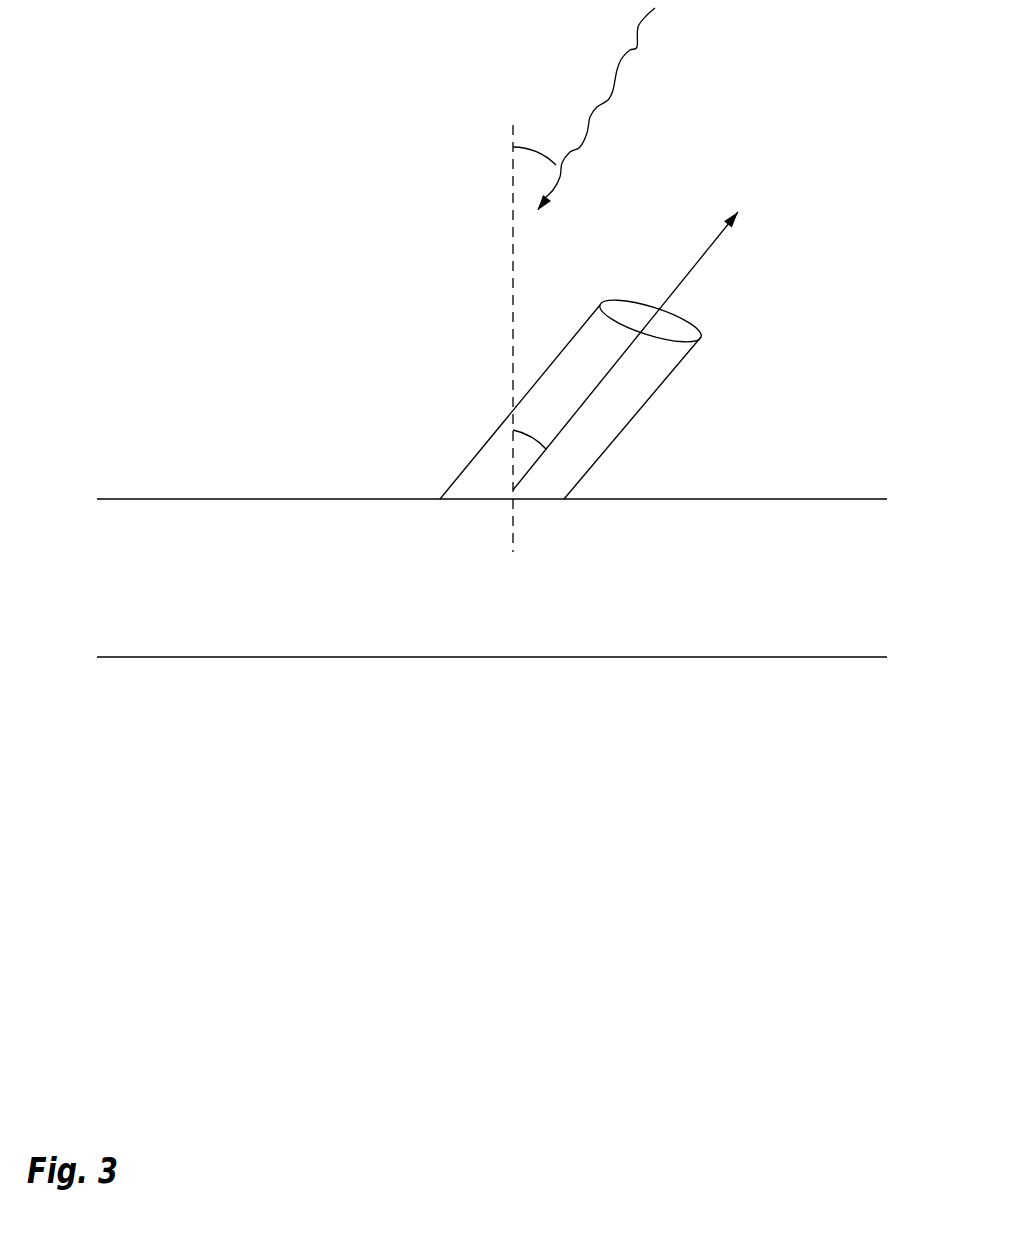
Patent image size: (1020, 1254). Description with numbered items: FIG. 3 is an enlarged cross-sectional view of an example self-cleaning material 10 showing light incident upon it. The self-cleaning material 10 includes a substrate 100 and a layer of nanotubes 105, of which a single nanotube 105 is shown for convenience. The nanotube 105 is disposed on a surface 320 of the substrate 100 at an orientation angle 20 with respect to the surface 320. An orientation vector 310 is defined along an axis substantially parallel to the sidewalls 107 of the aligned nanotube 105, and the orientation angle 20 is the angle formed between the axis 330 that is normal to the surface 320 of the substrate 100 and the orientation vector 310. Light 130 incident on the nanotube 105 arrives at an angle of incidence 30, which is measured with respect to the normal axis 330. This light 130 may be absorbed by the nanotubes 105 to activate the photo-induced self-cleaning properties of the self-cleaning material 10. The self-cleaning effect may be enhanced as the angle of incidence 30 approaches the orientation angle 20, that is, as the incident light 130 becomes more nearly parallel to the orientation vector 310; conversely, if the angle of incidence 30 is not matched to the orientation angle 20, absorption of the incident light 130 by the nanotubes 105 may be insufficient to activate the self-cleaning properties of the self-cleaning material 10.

The self-cleaning material 10 is at (228, 118).
The orientation angle 20 is at (546, 425).
The angle of incidence 30 is at (548, 135).
The substrate 100 is at (533, 604).
The nanotube 105 is at (559, 395).
The sidewalls 107 is at (473, 460).
The light 130 is at (638, 47).
The orientation vector 310 is at (683, 290).
The surface 320 is at (245, 500).
The axis 330 is at (513, 298).